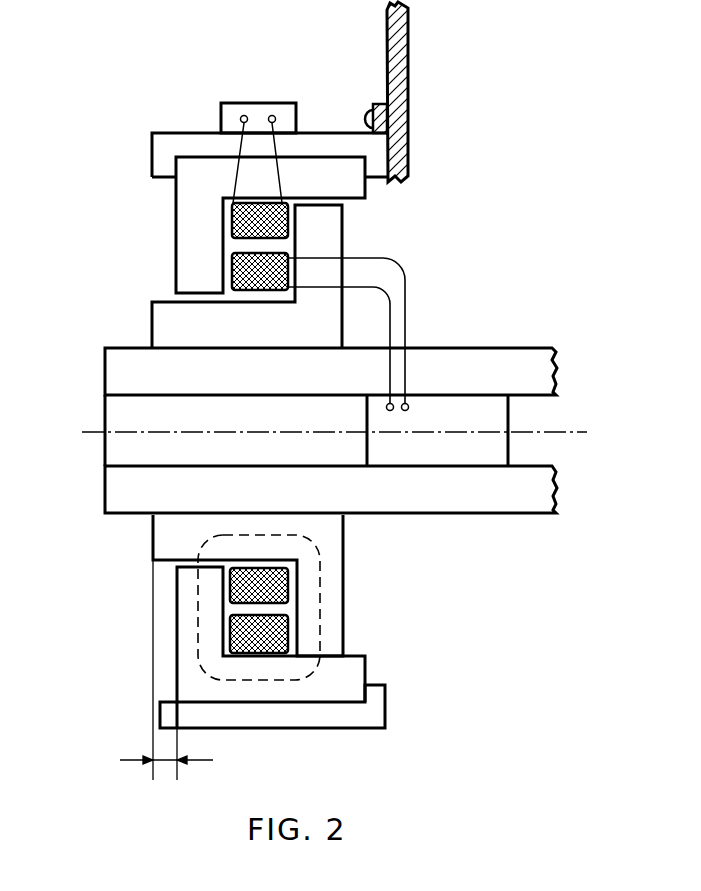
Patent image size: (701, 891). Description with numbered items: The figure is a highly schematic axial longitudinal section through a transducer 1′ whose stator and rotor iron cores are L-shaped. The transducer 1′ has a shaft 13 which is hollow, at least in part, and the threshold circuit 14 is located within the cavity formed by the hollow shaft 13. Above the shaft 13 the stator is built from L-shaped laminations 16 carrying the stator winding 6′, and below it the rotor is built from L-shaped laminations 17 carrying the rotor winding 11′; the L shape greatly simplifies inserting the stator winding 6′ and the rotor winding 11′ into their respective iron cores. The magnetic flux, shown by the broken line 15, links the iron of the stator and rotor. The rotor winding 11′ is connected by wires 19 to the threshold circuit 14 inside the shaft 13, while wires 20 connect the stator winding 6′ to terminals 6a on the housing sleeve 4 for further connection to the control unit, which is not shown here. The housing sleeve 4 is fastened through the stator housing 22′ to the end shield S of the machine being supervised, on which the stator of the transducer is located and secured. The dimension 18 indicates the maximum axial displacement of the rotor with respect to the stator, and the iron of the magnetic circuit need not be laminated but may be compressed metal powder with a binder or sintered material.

The end shield S is at (409, 44).
The stator housing 22′ is at (380, 103).
The housing sleeve 4 is at (380, 147).
The terminals 6a is at (272, 115).
The wires 20 is at (277, 173).
The stator laminations 16 is at (203, 253).
The shaft 13 is at (128, 376).
The threshold circuit 14 is at (487, 415).
The transducer 1′ is at (247, 430).
The rotor laminations 17 is at (172, 543).
The stator winding 6′ is at (288, 222).
The rotor winding 11′ is at (288, 259).
The wires 19 is at (407, 317).
The magnetic flux 15 is at (320, 582).
The dimension 18 is at (168, 762).